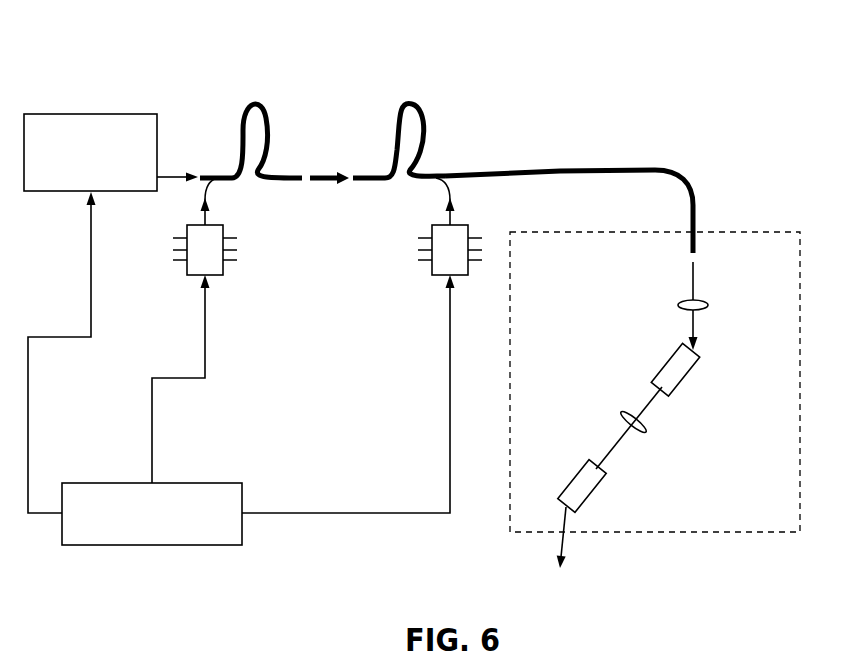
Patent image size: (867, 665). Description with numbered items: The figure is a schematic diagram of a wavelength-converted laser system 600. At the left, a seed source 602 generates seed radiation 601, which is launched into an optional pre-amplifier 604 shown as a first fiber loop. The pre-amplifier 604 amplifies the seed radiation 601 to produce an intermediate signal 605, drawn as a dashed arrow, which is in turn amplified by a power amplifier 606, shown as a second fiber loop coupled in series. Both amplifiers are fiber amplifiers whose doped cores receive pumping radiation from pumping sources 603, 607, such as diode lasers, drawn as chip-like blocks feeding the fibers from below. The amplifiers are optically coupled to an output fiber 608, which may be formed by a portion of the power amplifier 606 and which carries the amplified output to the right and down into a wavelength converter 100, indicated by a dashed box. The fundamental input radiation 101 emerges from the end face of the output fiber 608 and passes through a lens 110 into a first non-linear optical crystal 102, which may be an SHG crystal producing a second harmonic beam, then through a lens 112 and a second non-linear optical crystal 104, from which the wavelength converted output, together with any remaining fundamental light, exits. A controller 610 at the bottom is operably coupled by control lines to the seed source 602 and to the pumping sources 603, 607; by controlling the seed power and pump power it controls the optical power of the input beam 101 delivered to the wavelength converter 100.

The wavelength-converted laser system 600 is at (728, 74).
The seed source 602 is at (99, 114).
The seed radiation 601 is at (186, 177).
The pre-amplifier 604 is at (240, 104).
The intermediate signal 605 is at (330, 176).
The power amplifier 606 is at (412, 104).
The output fiber 608 is at (478, 174).
The pumping source 603 is at (215, 277).
The pumping source 607 is at (460, 277).
The controller 610 is at (152, 546).
The wavelength converter 100 is at (512, 532).
The fundamental input radiation 101 is at (693, 284).
The lens 110 is at (683, 308).
The first non-linear optical crystal 102 is at (690, 378).
The lens 112 is at (650, 433).
The second non-linear optical crystal 104 is at (595, 488).